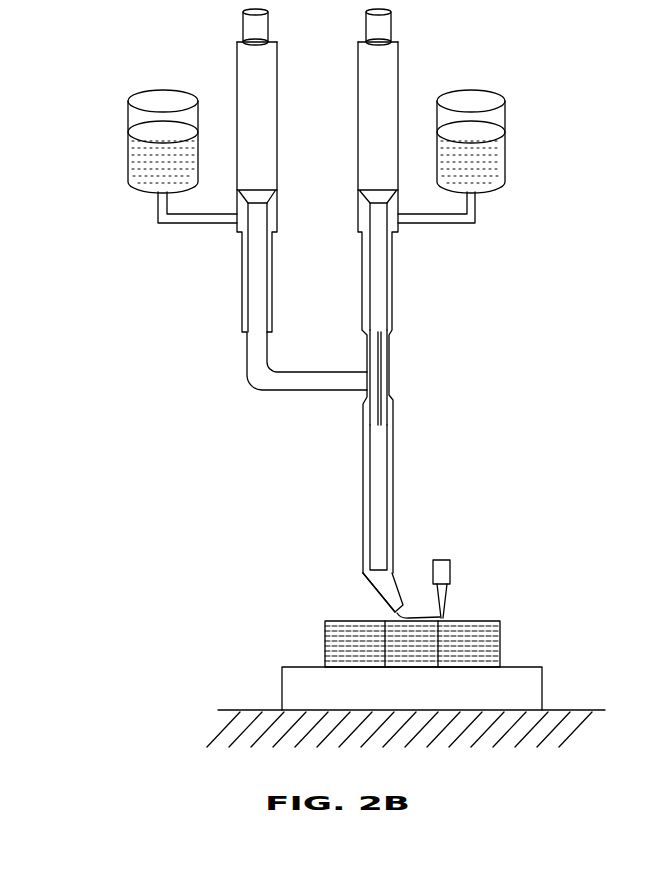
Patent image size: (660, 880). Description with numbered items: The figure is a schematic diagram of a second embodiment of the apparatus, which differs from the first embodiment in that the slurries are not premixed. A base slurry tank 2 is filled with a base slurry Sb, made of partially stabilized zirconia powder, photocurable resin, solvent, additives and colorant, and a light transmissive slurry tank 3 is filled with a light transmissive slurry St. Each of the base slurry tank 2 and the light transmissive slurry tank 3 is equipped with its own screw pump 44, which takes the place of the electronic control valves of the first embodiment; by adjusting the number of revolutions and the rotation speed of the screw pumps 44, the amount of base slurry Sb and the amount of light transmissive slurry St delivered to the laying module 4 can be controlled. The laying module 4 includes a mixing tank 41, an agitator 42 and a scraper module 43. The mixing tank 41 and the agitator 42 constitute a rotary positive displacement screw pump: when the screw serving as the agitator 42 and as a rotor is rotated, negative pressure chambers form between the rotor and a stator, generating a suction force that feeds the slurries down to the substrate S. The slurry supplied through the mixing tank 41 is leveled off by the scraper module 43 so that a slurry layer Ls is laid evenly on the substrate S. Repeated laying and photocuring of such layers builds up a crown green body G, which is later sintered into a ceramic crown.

The base slurry tank 2 is at (126, 155).
The light transmissive slurry tank 3 is at (506, 155).
The base slurry Sb is at (150, 178).
The light transmissive slurry St is at (485, 178).
The laying module 4 is at (327, 313).
The mixing tank 41 is at (363, 510).
The agitator 42 is at (418, 408).
The scraper module 43 is at (450, 570).
The screw pump 44 is at (250, 288).
The crown green body G is at (365, 620).
The slurry layer Ls is at (487, 620).
The substrate S is at (540, 685).